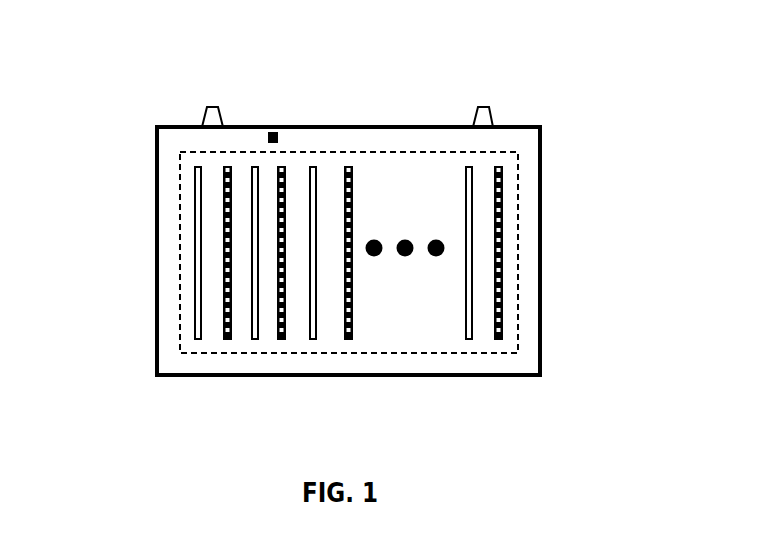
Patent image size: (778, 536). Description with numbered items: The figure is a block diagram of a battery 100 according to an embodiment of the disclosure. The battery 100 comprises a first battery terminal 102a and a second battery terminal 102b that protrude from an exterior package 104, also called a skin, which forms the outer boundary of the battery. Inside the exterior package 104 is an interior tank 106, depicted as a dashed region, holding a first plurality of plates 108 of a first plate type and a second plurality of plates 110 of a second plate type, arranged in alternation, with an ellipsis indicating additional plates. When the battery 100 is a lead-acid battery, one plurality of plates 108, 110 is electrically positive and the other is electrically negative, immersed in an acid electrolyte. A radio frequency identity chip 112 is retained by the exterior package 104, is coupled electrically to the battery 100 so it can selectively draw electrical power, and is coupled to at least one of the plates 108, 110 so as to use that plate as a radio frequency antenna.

The battery 100 is at (136, 218).
The first battery terminal 102a is at (213, 107).
The second battery terminal 102b is at (485, 107).
The exterior package 104 is at (525, 127).
The interior tank 106 is at (518, 256).
The first plurality of plates 108 is at (255, 340).
The second plurality of plates 110 is at (281, 340).
The RFID chip 112 is at (271, 132).